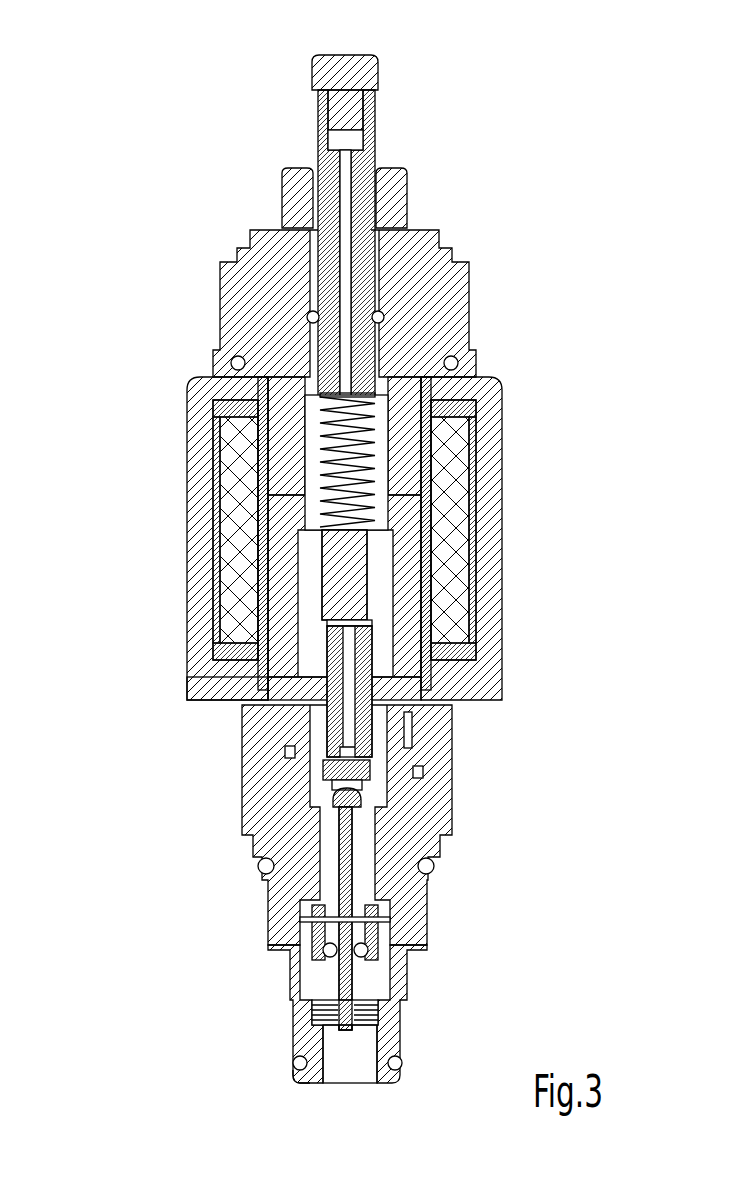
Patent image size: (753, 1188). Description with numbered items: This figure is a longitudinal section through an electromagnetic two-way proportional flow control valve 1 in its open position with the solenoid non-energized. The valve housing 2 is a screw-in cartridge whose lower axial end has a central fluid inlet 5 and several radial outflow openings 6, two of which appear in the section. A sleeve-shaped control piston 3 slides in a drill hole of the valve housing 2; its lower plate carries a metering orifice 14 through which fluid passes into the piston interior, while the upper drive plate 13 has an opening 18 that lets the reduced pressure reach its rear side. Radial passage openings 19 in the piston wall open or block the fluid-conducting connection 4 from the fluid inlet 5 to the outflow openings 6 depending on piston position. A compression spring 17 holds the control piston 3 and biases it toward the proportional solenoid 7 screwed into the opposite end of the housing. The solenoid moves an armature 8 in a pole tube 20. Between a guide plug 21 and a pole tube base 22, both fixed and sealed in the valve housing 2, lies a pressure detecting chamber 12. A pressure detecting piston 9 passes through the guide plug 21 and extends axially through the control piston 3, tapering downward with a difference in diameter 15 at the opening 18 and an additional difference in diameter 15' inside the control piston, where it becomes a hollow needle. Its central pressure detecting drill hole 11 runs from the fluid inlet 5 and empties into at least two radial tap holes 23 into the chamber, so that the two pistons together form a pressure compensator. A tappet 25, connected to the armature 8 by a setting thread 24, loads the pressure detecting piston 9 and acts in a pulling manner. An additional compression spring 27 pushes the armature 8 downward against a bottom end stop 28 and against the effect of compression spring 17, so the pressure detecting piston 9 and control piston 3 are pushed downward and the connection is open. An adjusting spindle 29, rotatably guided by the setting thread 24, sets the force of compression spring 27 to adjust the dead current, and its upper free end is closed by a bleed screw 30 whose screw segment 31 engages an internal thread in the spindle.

The flow control valve 1 is at (172, 180).
The valve housing 2 is at (438, 778).
The control piston 3 is at (408, 975).
The fluid-conducting connection 4 is at (266, 969).
The fluid inlet 5 is at (372, 1072).
The outflow openings 6 is at (402, 957).
The proportional solenoid 7 is at (455, 466).
The armature 8 is at (395, 580).
The pressure detecting piston 9 is at (320, 826).
The pressure detecting drill hole 11 is at (360, 822).
The pressure detecting chamber 12 is at (407, 735).
The drive plate 13 is at (300, 897).
The metering orifice 14 is at (300, 1042).
The difference in diameter 15 is at (284, 864).
The additional difference in diameter 15' is at (216, 1007).
The compression spring 17 is at (404, 1065).
The opening 18 is at (300, 920).
The radial passage openings 19 is at (300, 1083).
The pole tube 20 is at (480, 415).
The guide plug 21 is at (300, 805).
The pole tube base 22 is at (402, 690).
The tap holes 23 is at (423, 772).
The setting thread 24 is at (416, 230).
The tappet 25 is at (420, 650).
The compression spring 27 is at (460, 355).
The bottom end stop 28 is at (200, 690).
The adjusting spindle 29 is at (400, 305).
The bleed screw 30 is at (380, 64).
The screw segment 31 is at (378, 122).